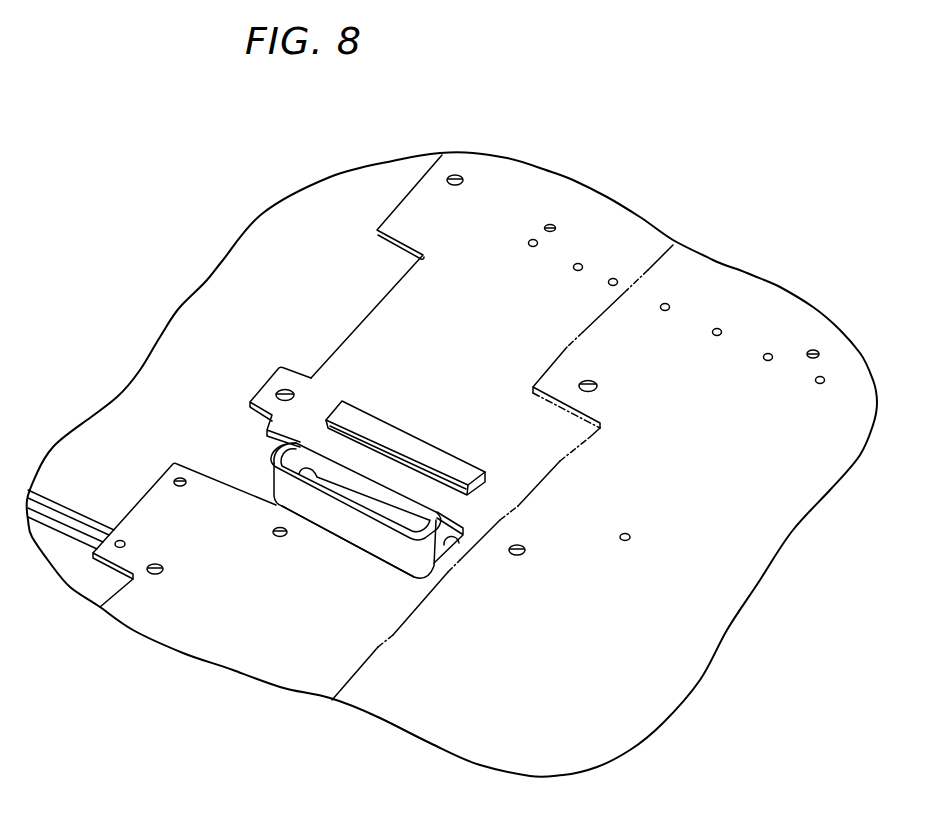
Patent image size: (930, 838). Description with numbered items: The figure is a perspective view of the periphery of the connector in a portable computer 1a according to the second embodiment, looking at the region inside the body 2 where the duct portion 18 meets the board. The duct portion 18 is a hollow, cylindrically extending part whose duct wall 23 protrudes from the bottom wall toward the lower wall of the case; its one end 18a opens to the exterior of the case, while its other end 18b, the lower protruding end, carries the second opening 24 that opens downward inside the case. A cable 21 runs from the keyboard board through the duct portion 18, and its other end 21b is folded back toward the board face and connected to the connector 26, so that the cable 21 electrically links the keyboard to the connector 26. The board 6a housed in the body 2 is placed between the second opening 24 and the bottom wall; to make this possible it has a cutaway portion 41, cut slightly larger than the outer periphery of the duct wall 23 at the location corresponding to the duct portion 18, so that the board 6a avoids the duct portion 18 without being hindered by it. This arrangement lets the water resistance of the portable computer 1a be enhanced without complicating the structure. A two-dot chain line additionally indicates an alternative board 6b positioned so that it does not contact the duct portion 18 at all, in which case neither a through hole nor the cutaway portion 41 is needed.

The portable computer 1a is at (88, 130).
The body 2 is at (263, 268).
The board 6a is at (519, 207).
The board 6b is at (653, 268).
The duct portion 18 is at (334, 511).
The one end of the duct portion 18a is at (402, 559).
The other end of the duct portion 18b is at (438, 511).
The cable 21 is at (321, 436).
The other end of the cable 21b is at (418, 474).
The duct wall 23 is at (362, 535).
The second opening 24 is at (296, 468).
The connector 26 is at (398, 437).
The cutaway portion 41 is at (446, 545).